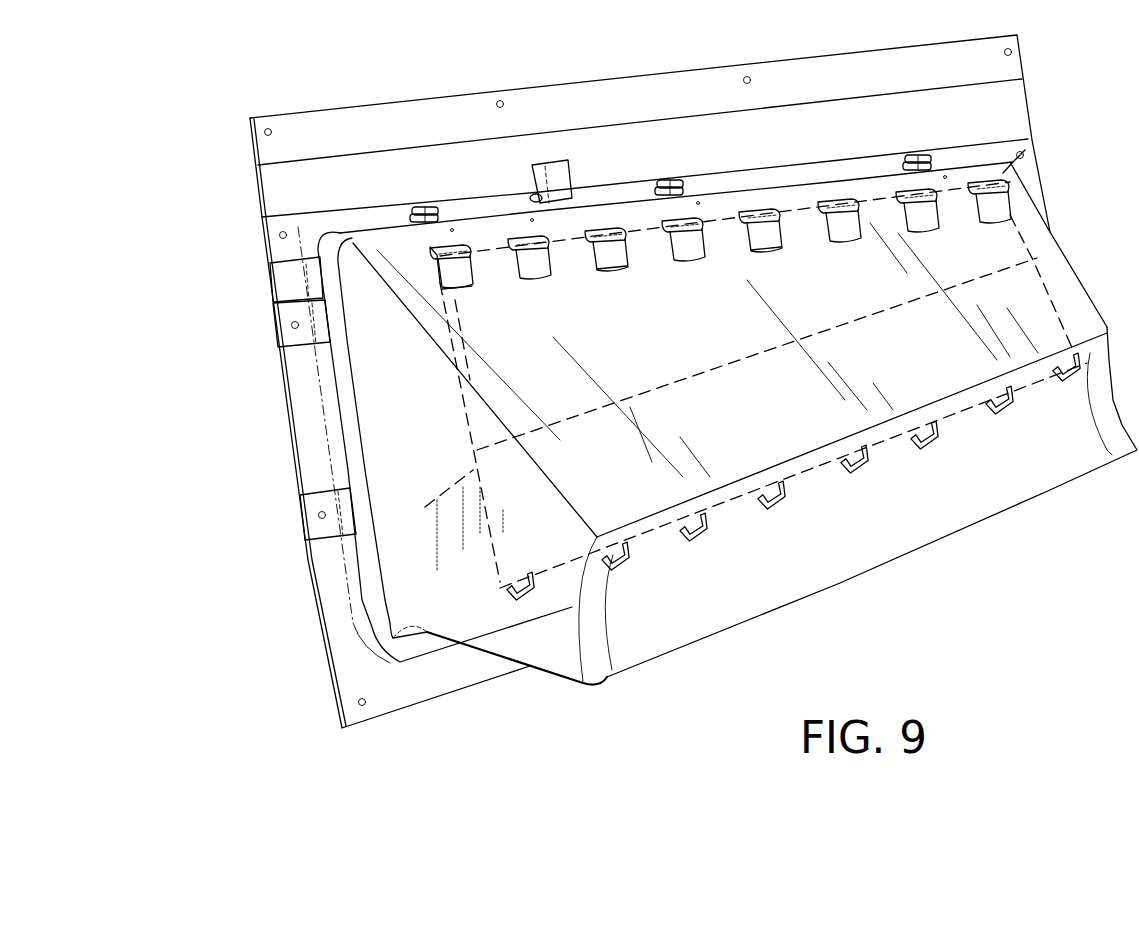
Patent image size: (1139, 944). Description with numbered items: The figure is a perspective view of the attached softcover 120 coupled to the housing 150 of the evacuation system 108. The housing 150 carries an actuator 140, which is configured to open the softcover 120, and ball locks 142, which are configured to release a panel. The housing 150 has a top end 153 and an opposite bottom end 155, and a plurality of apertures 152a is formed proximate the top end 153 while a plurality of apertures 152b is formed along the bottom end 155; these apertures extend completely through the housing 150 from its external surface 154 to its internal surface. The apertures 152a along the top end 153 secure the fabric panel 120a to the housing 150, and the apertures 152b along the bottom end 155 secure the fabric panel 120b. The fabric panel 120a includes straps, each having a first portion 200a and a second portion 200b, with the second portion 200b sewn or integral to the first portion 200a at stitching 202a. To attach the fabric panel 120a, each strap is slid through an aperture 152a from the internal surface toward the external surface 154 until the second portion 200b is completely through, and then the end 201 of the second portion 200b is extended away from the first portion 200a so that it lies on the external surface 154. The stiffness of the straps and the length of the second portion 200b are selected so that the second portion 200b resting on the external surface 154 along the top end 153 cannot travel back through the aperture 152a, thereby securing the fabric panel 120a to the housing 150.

The evacuation system 108 is at (212, 101).
The softcover 120 is at (743, 385).
The fabric panel 120a is at (488, 355).
The fabric panel 120b is at (537, 572).
The actuator 140 is at (557, 175).
The ball locks 142 is at (907, 165).
The housing 150 is at (1076, 294).
The apertures 152a is at (434, 258).
The apertures 152b is at (867, 470).
The top end of housing 153 is at (1003, 174).
The external surface 154 is at (765, 402).
The bottom end of housing 155 is at (472, 638).
The first portion of strap 200a is at (435, 247).
The second portion of strap 200b is at (460, 266).
The end of second portion 201 is at (462, 291).
The lower clips 202a is at (836, 456).